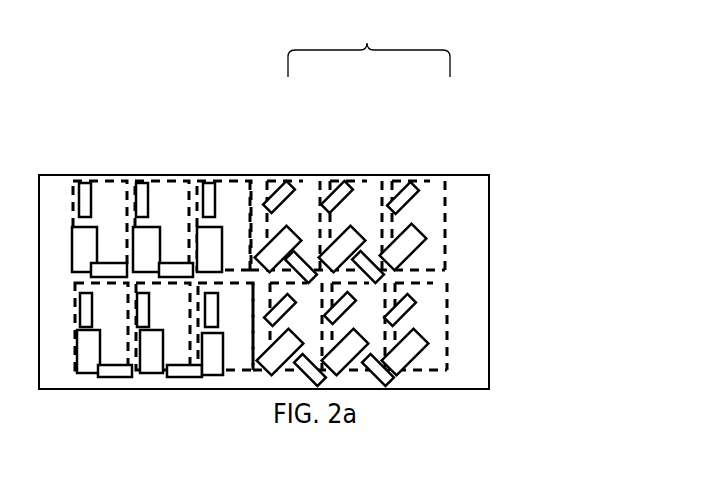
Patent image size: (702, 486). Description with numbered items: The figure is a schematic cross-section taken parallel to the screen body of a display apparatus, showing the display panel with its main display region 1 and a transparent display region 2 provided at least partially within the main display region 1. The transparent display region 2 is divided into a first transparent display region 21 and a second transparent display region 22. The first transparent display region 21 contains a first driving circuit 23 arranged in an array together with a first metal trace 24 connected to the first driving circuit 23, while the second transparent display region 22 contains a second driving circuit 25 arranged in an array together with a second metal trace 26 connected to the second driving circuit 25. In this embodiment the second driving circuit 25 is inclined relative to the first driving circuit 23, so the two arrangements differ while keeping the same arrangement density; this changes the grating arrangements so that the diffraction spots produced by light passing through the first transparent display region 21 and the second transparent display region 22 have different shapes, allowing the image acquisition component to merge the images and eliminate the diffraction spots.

The main display region 1 is at (468, 295).
The transparent display region 2 is at (369, 43).
The first transparent display region 21 is at (227, 178).
The second transparent display region 22 is at (358, 176).
The first driving circuit 23 is at (85, 238).
The first metal trace 24 is at (143, 198).
The second driving circuit 25 is at (410, 242).
The second metal trace 26 is at (402, 202).